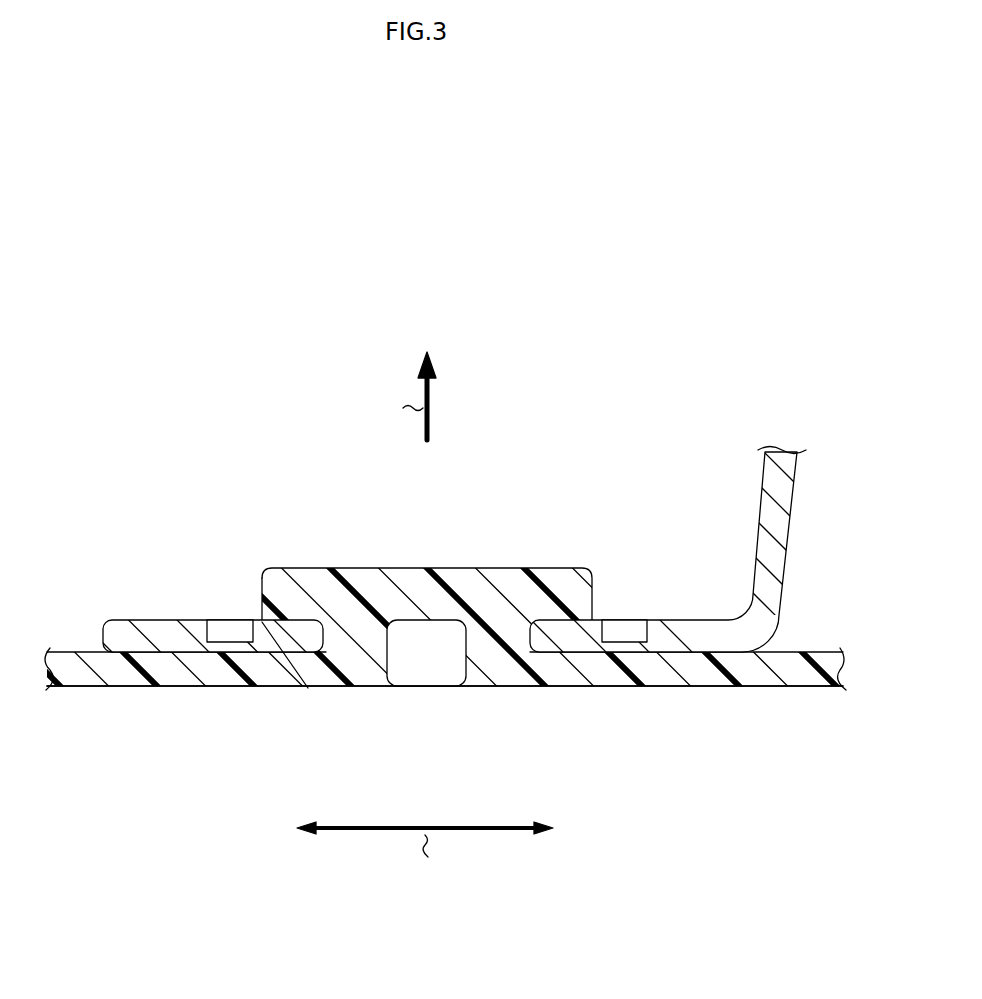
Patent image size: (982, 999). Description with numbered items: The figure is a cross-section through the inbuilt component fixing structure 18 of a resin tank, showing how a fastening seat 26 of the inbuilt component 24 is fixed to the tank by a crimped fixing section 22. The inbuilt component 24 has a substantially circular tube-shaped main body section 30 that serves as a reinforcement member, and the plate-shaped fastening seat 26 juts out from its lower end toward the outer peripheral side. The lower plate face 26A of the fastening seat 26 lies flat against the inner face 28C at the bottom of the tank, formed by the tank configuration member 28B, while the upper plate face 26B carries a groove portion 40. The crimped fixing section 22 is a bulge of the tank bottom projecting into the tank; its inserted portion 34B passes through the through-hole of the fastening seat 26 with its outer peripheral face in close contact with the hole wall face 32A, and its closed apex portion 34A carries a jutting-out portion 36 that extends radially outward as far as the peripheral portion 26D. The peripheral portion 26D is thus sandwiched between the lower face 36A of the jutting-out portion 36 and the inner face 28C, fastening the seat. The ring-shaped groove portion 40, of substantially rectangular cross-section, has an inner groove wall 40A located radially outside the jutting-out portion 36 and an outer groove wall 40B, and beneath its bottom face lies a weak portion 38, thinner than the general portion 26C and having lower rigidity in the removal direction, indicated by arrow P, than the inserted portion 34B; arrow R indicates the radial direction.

The inbuilt component fixing structure 18 is at (119, 402).
The crimped fixing section 22 is at (490, 534).
The inbuilt component 24 is at (750, 505).
The fastening seat 26 is at (142, 610).
The plate face 26A is at (145, 660).
The plate face 26B is at (192, 620).
The general portion 26C is at (697, 650).
The peripheral portion 26D is at (552, 620).
The tank configuration member 28B is at (826, 640).
The inner face 28C is at (145, 658).
The main body section 30 is at (762, 470).
The hole wall face 32A is at (338, 628).
The apex portion 34A is at (420, 567).
The inserted portion 34B is at (328, 626).
The jutting-out portion 36 is at (258, 583).
The lower face 36A is at (264, 626).
The weak portion 38 is at (612, 650).
The groove portion 40 is at (627, 626).
The groove wall 40A is at (611, 630).
The groove wall 40B is at (637, 628).